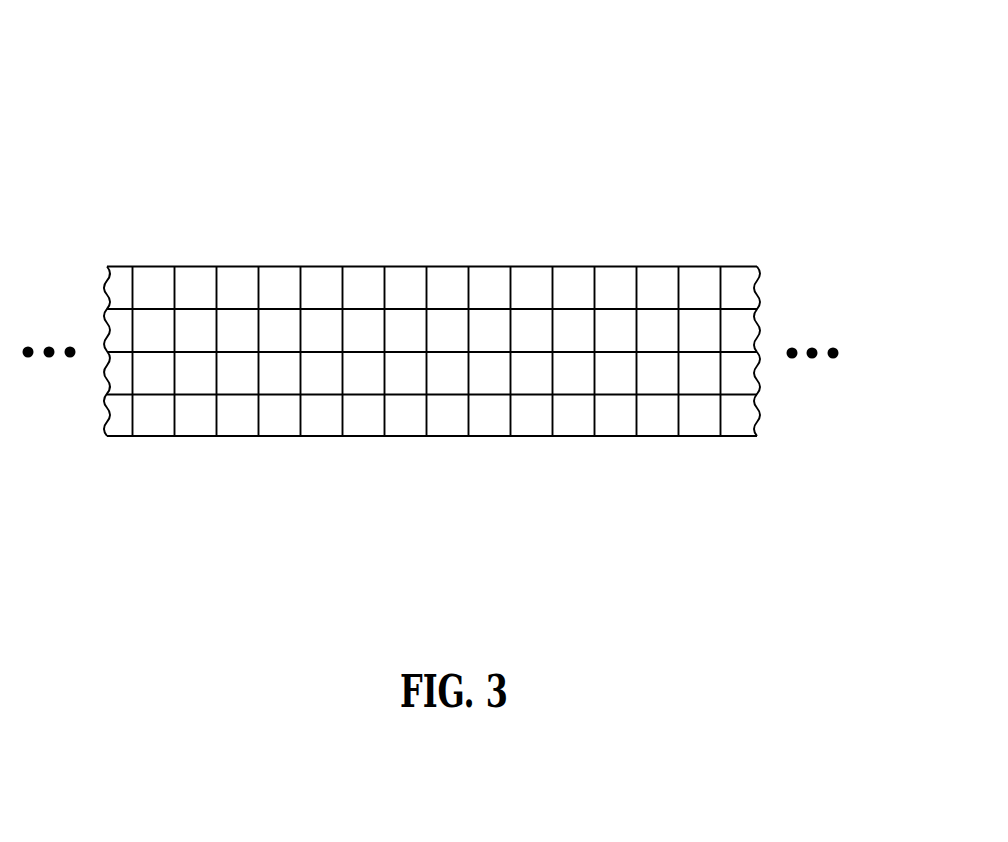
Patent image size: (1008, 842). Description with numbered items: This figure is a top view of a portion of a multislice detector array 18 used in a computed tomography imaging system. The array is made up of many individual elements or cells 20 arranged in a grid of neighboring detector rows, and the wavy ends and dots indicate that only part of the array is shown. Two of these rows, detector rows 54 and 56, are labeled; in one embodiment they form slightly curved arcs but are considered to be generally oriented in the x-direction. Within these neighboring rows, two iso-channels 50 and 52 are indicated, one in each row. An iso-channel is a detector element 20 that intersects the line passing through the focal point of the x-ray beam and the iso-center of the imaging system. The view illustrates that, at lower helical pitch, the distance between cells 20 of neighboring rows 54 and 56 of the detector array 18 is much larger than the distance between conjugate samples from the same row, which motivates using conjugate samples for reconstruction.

The multislice detector array 18 is at (588, 137).
The detector element 20 is at (243, 320).
The iso-channel 50 is at (447, 323).
The iso-channel 52 is at (449, 381).
The detector row 54 is at (765, 328).
The detector row 56 is at (765, 380).